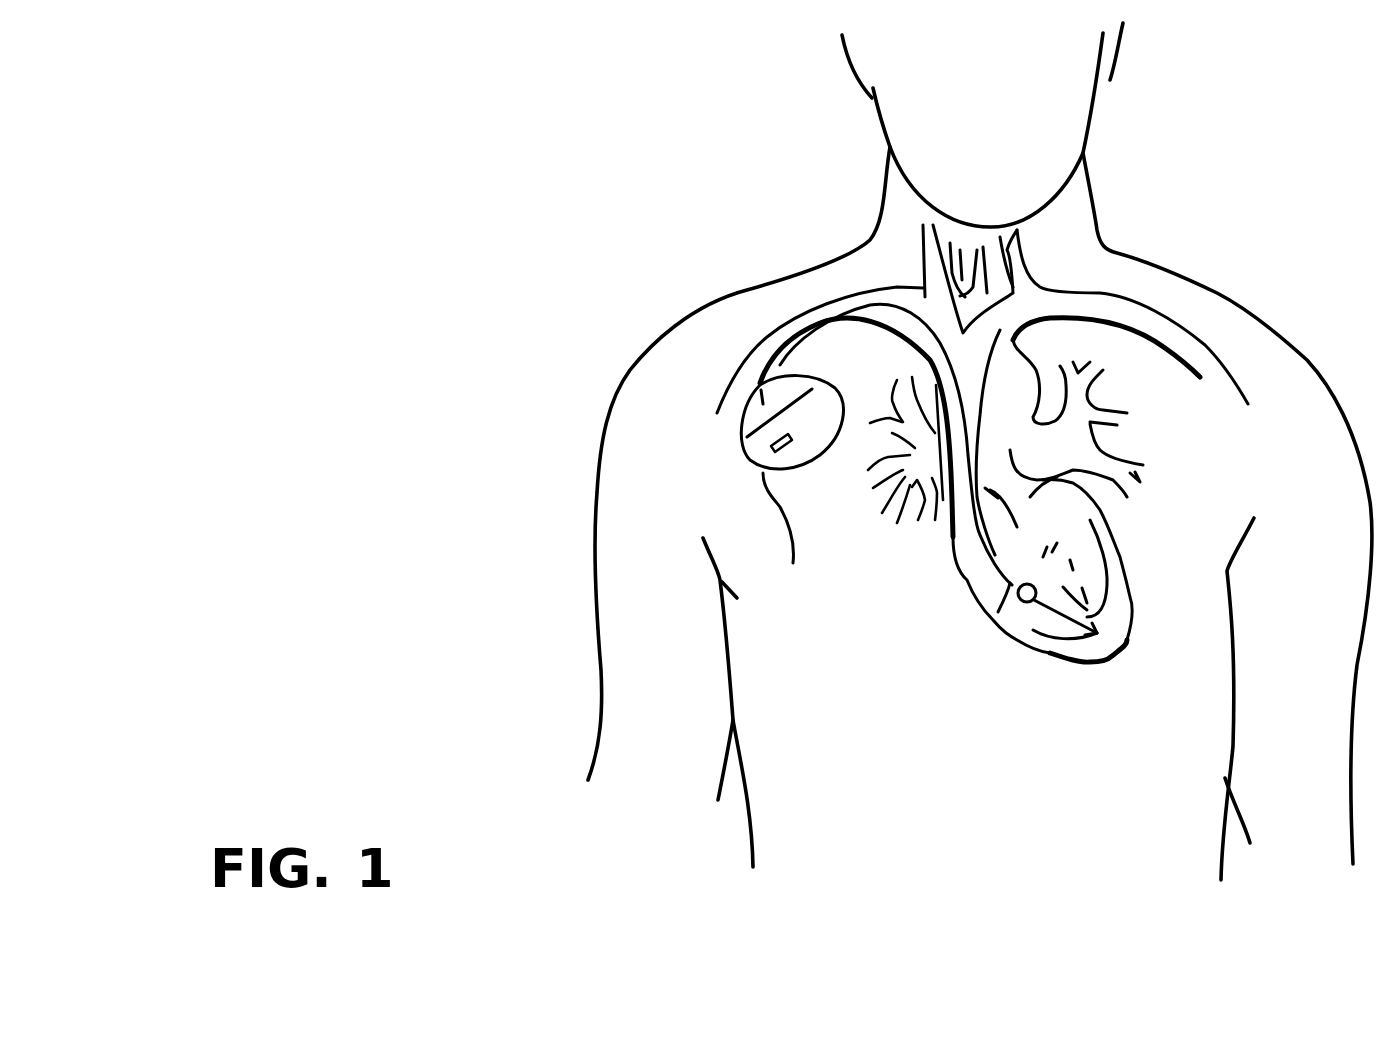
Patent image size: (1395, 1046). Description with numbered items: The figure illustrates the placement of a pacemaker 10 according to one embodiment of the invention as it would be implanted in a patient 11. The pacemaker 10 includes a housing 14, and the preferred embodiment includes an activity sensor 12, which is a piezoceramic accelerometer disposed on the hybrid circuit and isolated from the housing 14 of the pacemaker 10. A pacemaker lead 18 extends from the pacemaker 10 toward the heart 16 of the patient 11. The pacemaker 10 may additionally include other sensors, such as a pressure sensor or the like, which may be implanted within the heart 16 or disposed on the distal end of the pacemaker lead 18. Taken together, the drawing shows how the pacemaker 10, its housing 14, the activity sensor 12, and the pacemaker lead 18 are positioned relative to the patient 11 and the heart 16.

The pacemaker 10 is at (717, 463).
The patient 11 is at (1270, 328).
The activity sensor 12 is at (790, 436).
The housing 14 is at (787, 538).
The heart 16 is at (1010, 640).
The pacemaker lead 18 is at (828, 310).